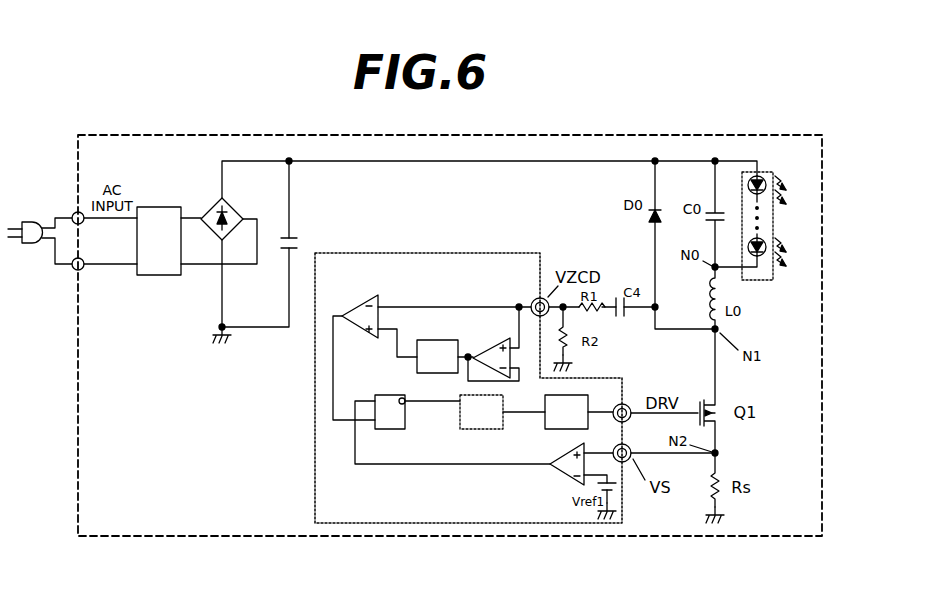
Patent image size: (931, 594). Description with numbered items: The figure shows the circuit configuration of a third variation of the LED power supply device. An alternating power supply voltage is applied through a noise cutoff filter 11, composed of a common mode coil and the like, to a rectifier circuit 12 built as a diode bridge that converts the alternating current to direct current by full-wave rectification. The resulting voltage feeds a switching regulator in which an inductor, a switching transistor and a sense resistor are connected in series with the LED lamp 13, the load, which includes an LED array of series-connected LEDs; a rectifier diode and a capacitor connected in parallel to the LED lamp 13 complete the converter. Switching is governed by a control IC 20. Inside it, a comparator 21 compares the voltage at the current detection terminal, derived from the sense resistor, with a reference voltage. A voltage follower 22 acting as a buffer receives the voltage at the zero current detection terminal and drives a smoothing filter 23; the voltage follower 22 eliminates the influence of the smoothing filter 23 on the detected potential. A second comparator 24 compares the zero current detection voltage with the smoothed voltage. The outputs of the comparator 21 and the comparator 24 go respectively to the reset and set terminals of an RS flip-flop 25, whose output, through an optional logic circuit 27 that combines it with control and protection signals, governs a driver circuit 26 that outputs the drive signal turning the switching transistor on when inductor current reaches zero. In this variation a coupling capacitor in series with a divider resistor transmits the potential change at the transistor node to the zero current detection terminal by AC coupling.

The noise cutoff filter 11 is at (160, 277).
The rectifier circuit 12 is at (238, 210).
The LED lamp 13 is at (765, 281).
The control IC 20 is at (503, 252).
The comparator 21 is at (567, 478).
The voltage follower 22 is at (498, 346).
The smoothing filter 23 is at (438, 340).
The comparator 24 is at (365, 305).
The RS flip-flop 25 is at (401, 430).
The driver circuit 26 is at (558, 430).
The logic circuit 27 is at (481, 430).